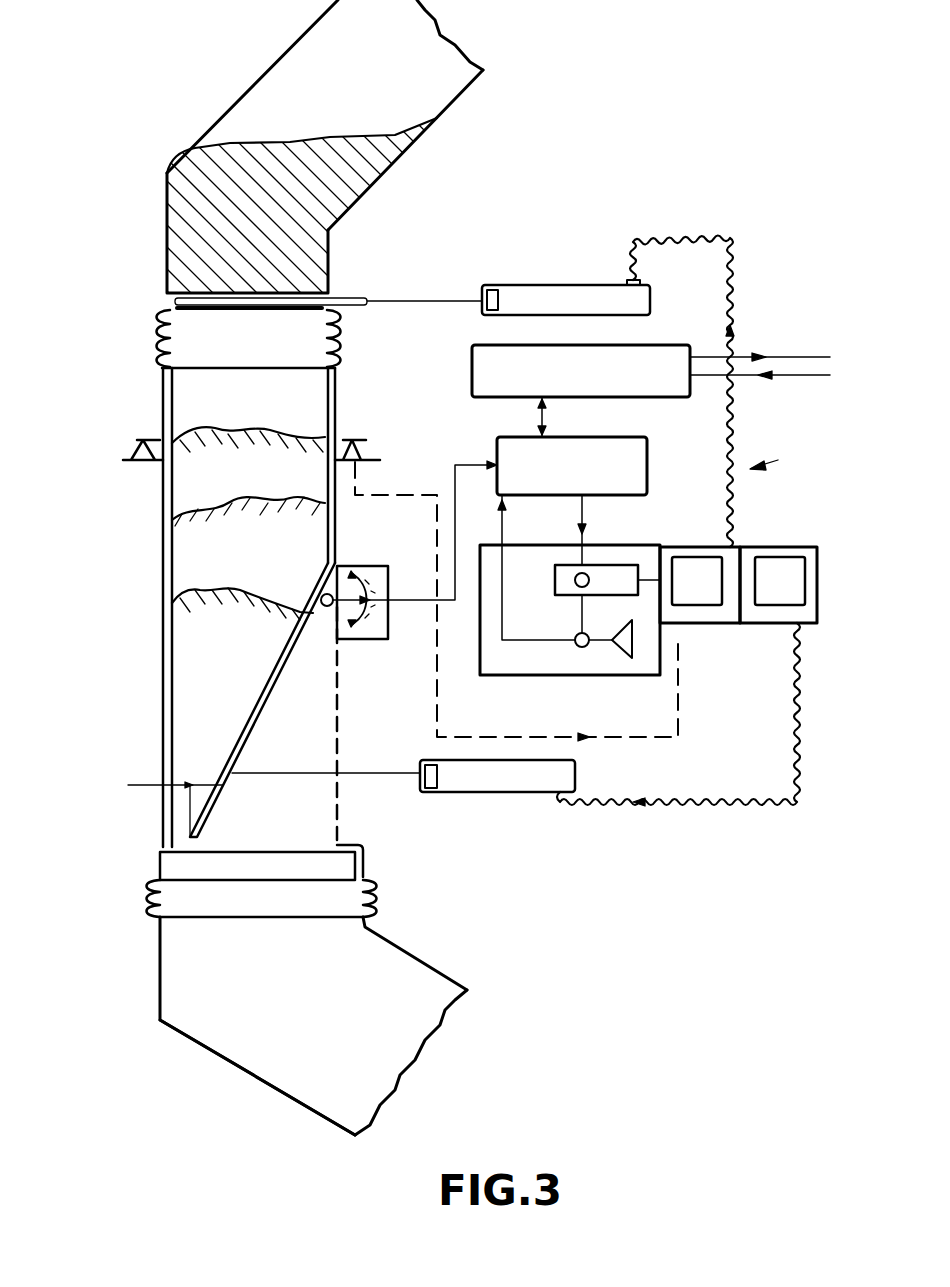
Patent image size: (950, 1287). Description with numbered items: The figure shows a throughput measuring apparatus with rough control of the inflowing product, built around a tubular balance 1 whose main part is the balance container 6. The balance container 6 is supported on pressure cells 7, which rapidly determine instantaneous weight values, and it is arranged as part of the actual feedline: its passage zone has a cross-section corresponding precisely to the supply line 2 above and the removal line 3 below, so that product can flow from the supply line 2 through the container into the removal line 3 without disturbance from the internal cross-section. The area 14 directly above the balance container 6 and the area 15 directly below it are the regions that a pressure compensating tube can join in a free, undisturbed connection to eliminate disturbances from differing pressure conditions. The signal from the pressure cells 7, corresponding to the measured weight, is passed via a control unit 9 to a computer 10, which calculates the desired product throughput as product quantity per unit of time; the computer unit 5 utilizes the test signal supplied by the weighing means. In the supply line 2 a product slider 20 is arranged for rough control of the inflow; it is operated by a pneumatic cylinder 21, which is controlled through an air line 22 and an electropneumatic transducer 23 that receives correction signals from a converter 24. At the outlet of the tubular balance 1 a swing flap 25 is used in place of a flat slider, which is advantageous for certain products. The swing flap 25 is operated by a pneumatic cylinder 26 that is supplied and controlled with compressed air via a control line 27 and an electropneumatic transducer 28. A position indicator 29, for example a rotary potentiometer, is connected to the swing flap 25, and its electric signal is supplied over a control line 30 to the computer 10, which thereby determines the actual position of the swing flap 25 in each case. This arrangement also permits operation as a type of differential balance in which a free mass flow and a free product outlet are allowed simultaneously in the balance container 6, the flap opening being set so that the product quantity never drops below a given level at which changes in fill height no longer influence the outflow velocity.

The tubular balance 1 is at (246, 624).
The supply line 2 is at (387, 107).
The removal line 3 is at (267, 1053).
The computer unit 5 is at (779, 461).
The balance container 6 is at (332, 400).
The pressure cells 7 is at (137, 453).
The control unit 9 is at (473, 356).
The computer 10 is at (638, 450).
The area directly above the balance container 14 is at (325, 146).
The area directly below the balance container 15 is at (313, 1026).
The product slider 20 is at (343, 297).
The pneumatic cylinder 21 is at (532, 297).
The air line 22 is at (732, 297).
The electropneumatic transducer 23 is at (688, 550).
The converter 24 is at (618, 663).
The swing flap 25 is at (272, 697).
The pneumatic cylinder 26 is at (463, 778).
The control line 27 is at (685, 807).
The electropneumatic transducer 28 is at (817, 610).
The position indicator 29 is at (380, 630).
The control line 30 is at (467, 465).